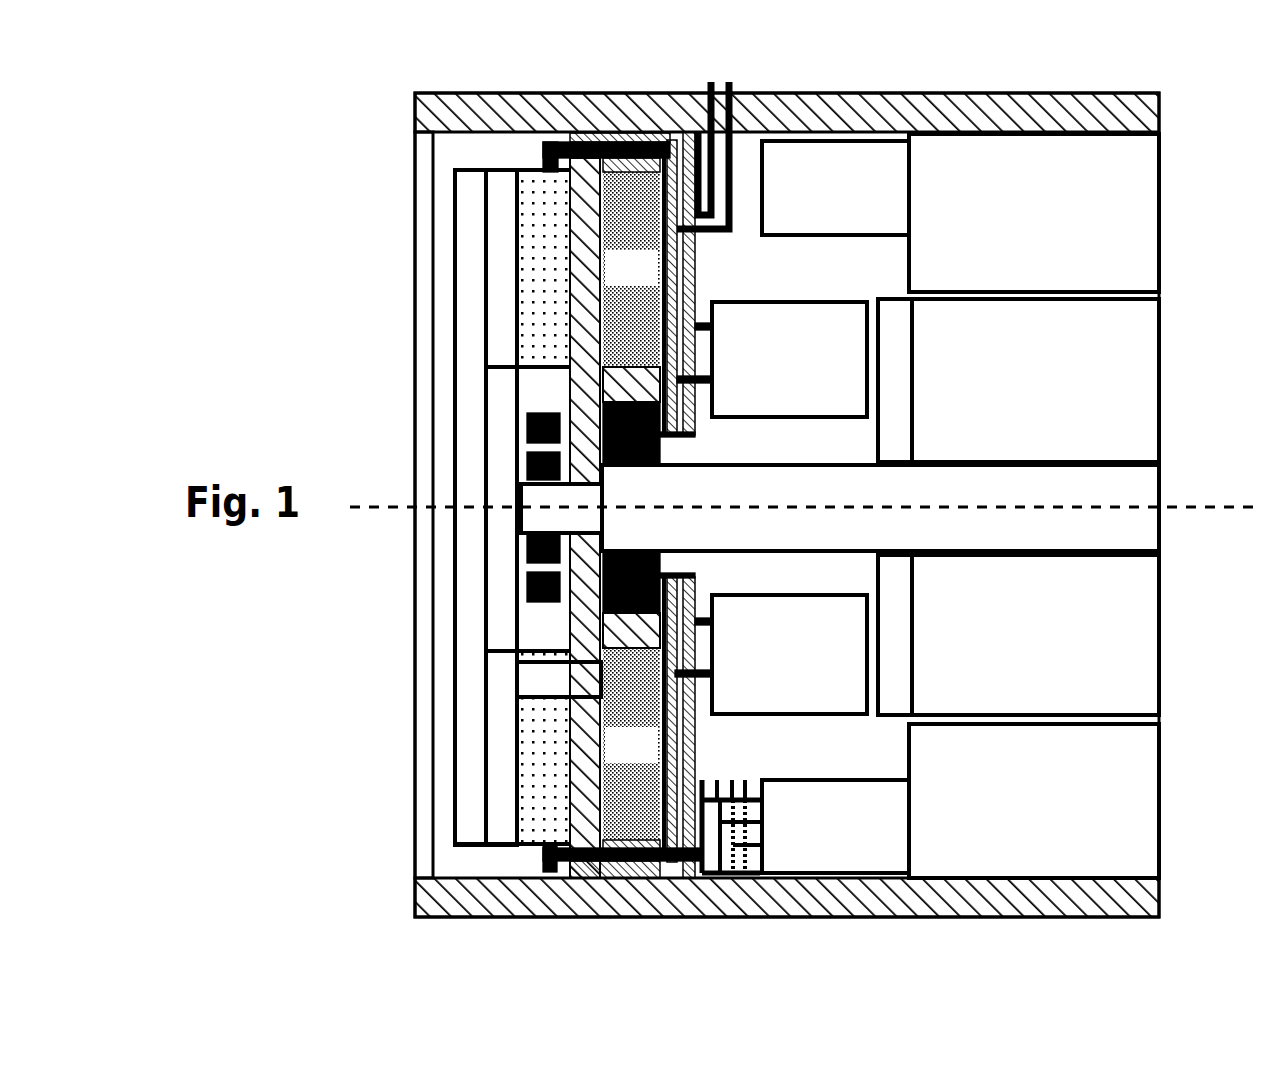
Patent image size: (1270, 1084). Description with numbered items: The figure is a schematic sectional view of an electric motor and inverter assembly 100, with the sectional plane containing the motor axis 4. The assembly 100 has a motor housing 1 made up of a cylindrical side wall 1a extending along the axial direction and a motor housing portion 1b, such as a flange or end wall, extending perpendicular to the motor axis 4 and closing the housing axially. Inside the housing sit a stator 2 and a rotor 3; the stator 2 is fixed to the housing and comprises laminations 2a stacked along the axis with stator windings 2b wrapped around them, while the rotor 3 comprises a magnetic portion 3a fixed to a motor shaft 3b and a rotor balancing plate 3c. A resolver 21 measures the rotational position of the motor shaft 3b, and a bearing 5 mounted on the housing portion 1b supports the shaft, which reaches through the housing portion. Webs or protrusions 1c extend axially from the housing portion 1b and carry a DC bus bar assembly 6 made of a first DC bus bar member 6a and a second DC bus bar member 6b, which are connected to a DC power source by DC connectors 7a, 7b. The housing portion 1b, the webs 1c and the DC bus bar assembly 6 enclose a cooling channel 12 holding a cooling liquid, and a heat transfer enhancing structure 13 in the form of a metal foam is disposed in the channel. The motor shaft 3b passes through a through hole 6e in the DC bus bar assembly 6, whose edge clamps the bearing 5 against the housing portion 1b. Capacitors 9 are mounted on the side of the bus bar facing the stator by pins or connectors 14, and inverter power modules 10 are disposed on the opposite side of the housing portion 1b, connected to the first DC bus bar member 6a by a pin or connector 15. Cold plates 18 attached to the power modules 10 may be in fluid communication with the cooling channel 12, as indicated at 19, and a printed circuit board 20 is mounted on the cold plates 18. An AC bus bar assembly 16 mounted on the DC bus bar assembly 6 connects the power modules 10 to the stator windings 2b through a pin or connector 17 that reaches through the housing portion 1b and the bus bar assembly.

The motor housing 1 is at (988, 80).
The side wall 1a is at (458, 101).
The motor housing portion 1b is at (570, 340).
The webs or protrusions 1c is at (600, 388).
The stator 2 is at (1013, 506).
The laminations 2a is at (1046, 230).
The stator windings 2b is at (854, 208).
The rotor 3 is at (1070, 507).
The magnetic portion 3a is at (1051, 403).
The motor shaft 3b is at (1030, 558).
The rotor balancing plate 3c is at (914, 633).
The motor axis 4 is at (1185, 512).
The bearing 5 is at (667, 447).
The DC bus bar assembly 6 is at (773, 505).
The first DC bus bar member 6a is at (679, 730).
The second DC bus bar member 6b is at (699, 763).
The through hole 6e is at (683, 562).
The DC connector 7a is at (740, 106).
The DC connector 7b is at (712, 180).
The capacitors 9 is at (800, 383).
The inverter power modules 10 is at (532, 195).
The cooling channel 12 is at (646, 281).
The heat transfer enhancing structure 13 is at (617, 318).
The pins or connectors 14 is at (701, 604).
The pin or connector 15 is at (607, 140).
The AC bus bar assembly 16 is at (745, 870).
The pin or connector 17 is at (653, 878).
The cold plate 18 is at (497, 250).
The fluid communication 19 is at (540, 675).
The printed circuit board 20 is at (456, 548).
The resolver 21 is at (507, 463).
The electric motor and inverter assembly 100 is at (283, 222).